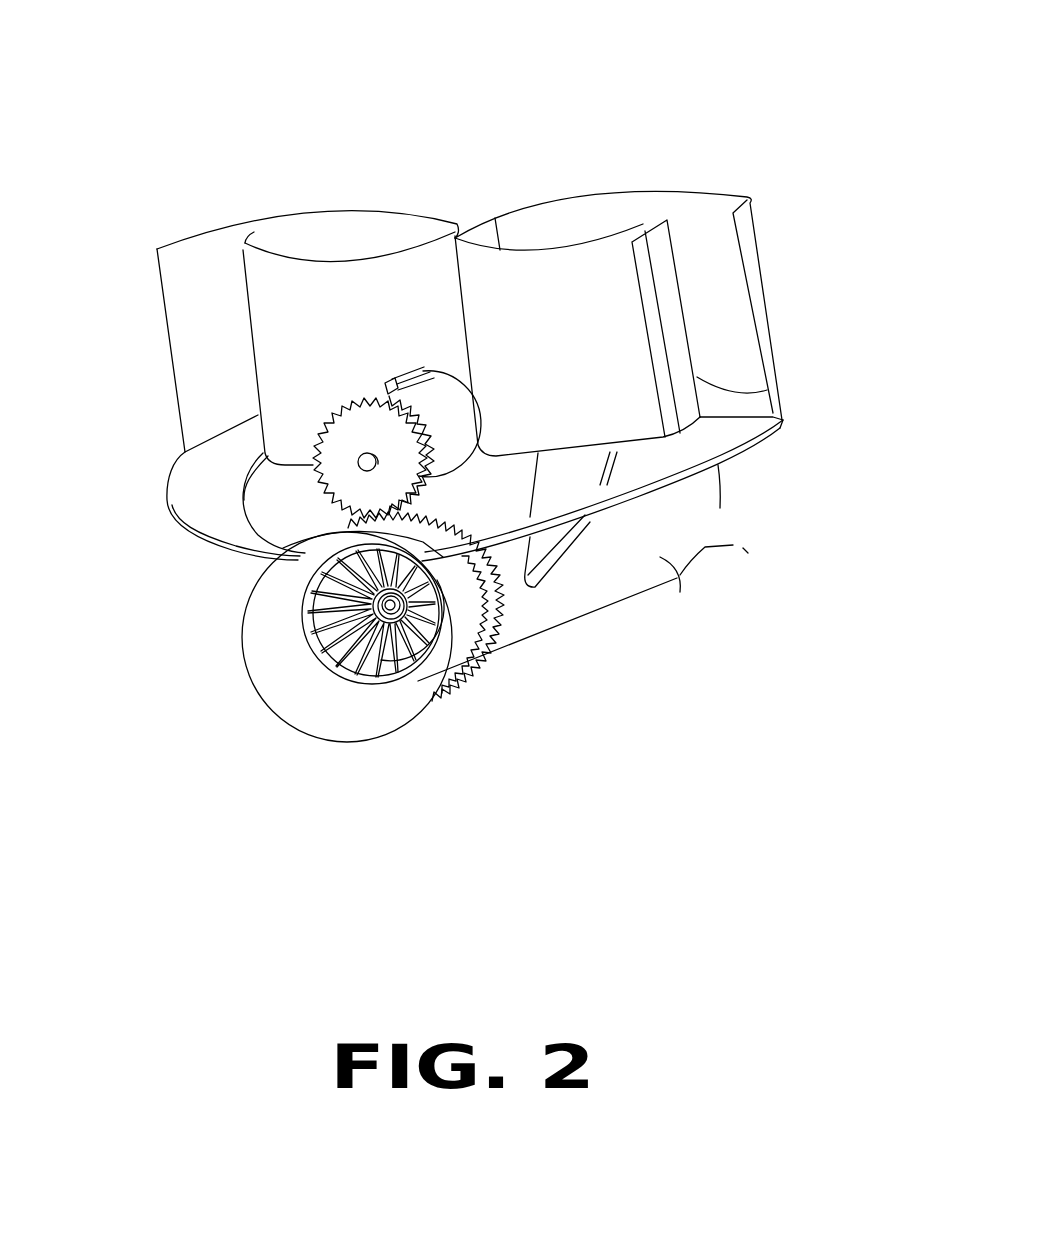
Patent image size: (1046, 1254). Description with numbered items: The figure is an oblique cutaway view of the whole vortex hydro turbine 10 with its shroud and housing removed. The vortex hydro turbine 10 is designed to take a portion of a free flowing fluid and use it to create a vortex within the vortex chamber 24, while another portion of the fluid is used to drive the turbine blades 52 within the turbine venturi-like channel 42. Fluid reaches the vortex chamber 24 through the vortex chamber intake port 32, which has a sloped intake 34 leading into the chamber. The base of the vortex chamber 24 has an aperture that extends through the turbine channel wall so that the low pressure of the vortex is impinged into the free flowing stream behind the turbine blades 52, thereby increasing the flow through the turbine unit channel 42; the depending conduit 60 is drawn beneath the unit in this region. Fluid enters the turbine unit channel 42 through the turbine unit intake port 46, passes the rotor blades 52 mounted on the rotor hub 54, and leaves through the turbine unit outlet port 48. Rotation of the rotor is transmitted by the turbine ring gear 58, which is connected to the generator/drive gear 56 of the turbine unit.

The vortex hydro turbine 10 is at (775, 105).
The vortex chamber 24 is at (348, 240).
The vortex chamber intake port 32 is at (220, 372).
The sloped intake 34 is at (200, 513).
The turbine unit channel 42 is at (289, 669).
The turbine unit intake port 46 is at (340, 732).
The turbine unit outlet port 48 is at (745, 550).
The rotor blades 52 is at (440, 660).
The rotor hub 54 is at (388, 612).
The generator/drive gear 56 is at (457, 418).
The turbine ring gear 58 is at (482, 643).
The depending conduit 60 is at (543, 547).